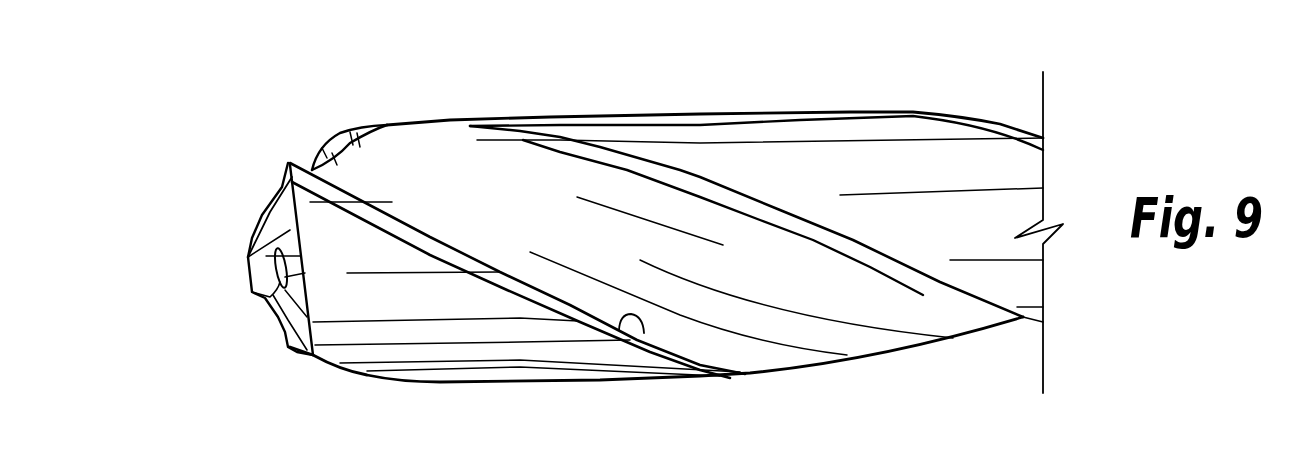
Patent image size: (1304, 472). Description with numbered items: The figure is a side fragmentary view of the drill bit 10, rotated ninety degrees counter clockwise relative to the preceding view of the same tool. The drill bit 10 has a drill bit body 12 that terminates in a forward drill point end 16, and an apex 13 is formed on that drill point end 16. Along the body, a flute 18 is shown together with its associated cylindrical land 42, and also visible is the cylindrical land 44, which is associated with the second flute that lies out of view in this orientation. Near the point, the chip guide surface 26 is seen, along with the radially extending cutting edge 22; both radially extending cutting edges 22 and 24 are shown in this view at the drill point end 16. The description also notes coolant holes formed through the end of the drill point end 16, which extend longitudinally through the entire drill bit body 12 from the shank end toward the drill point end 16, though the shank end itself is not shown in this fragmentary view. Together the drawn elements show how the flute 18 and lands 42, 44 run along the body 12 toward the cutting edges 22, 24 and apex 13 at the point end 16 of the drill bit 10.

The drill bit 10 is at (388, 124).
The drill bit body 12 is at (430, 121).
The apex 13 is at (248, 257).
The drill point end 16 is at (268, 213).
The flute 18 is at (508, 157).
The radially extending cutting edge 22 is at (288, 163).
The radially extending cutting edge 24 is at (287, 334).
The chip guide surface 26 is at (348, 130).
The cylindrical land 42 is at (644, 333).
The cylindrical land 44 is at (990, 118).